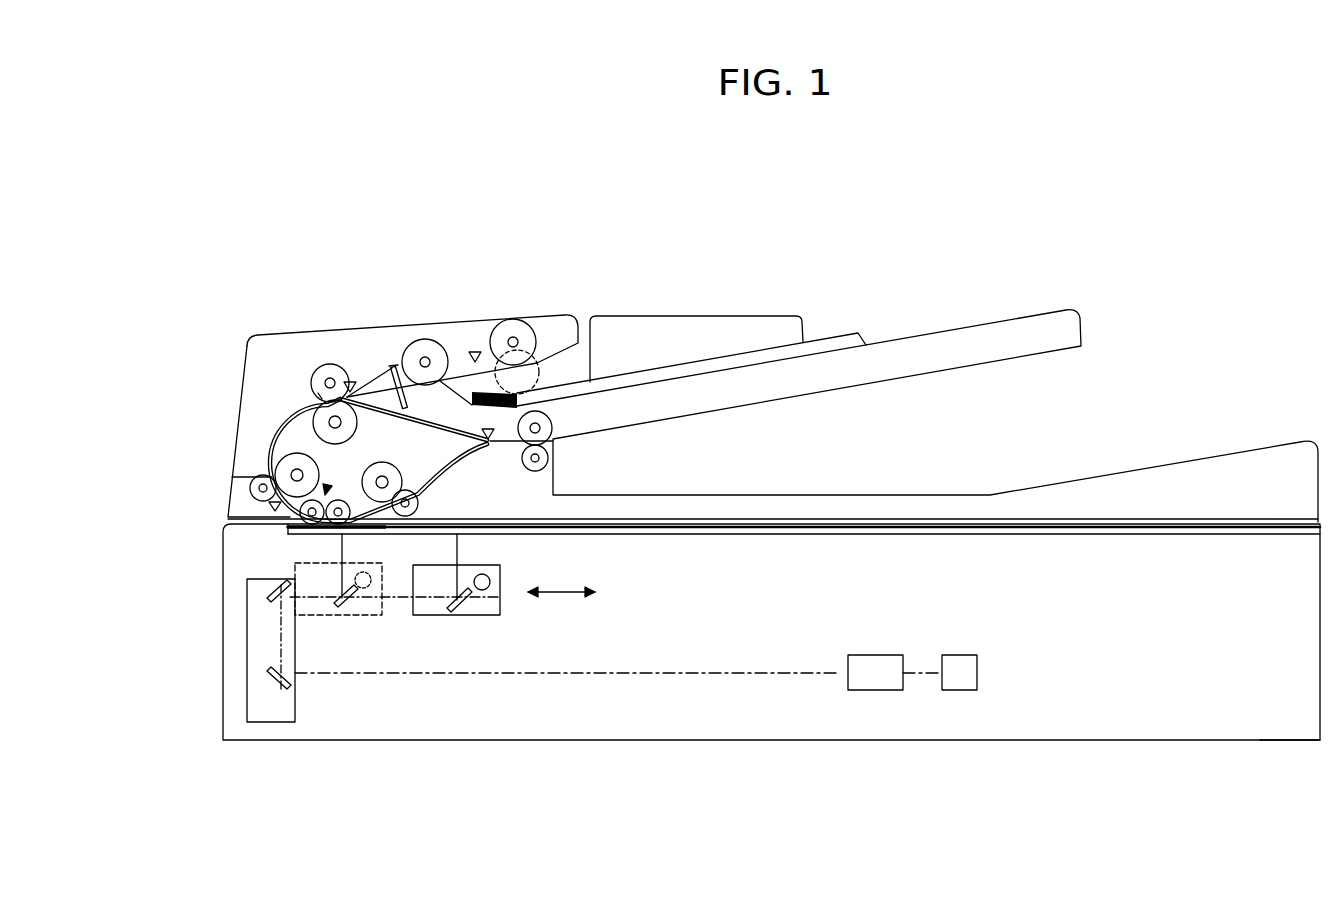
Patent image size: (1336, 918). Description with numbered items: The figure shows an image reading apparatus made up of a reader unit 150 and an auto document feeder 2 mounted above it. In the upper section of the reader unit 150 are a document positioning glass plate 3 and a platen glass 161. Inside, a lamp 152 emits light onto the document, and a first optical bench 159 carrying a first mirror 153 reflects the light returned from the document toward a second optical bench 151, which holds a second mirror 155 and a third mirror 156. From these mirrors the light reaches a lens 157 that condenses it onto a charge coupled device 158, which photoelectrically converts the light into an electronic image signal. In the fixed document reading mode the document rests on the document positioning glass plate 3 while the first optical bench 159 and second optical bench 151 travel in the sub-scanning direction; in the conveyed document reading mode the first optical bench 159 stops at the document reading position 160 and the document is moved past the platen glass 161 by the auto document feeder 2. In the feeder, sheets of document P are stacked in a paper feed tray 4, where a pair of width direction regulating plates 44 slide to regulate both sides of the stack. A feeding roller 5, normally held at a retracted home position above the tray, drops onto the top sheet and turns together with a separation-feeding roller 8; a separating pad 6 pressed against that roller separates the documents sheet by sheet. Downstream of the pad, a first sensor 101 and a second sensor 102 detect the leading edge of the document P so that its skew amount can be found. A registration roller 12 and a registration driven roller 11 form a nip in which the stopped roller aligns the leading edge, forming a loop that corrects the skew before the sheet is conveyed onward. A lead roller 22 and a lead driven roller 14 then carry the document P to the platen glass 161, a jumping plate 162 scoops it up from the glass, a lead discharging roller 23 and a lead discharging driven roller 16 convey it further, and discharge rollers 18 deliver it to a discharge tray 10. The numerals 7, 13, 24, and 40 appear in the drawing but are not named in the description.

The auto document feeder (ADF) 2 is at (679, 306).
The document positioning glass plate 3 is at (787, 534).
The paper feed tray 4 is at (1016, 328).
The feeding roller 5 is at (516, 318).
The separating pad 6 is at (428, 382).
The conveyance direction 7 is at (351, 380).
The separation-feeding roller 8 is at (424, 338).
The discharge tray 10 is at (838, 493).
The registration driven roller 11 is at (327, 364).
The registration roller 12 is at (318, 394).
The conveyance roller 13 is at (299, 512).
The lead driven roller 14 is at (251, 477).
The lead discharging driven roller 16 is at (419, 500).
The discharge rollers 18 is at (550, 461).
The lead roller 22 is at (282, 451).
The lead discharging roller 23 is at (386, 470).
The conveyance belt 24 is at (330, 483).
The document 40 is at (474, 351).
The width direction regulating plates 44 is at (748, 316).
The document P is at (826, 336).
The first sensor 101 is at (395, 366).
The second sensor 102 is at (408, 296).
The reader unit 150 is at (967, 750).
The second optical bench 151 is at (247, 652).
The lamp 152 is at (500, 573).
The first mirror 153 is at (468, 622).
The second mirror 155 is at (283, 606).
The third mirror 156 is at (268, 686).
The lens 157 is at (876, 654).
The charge coupled device (CCD) 158 is at (960, 654).
The first optical bench 159 is at (505, 609).
The document reading position 160 is at (345, 615).
The platen glass 161 is at (290, 532).
The jumping plate 162 is at (359, 532).